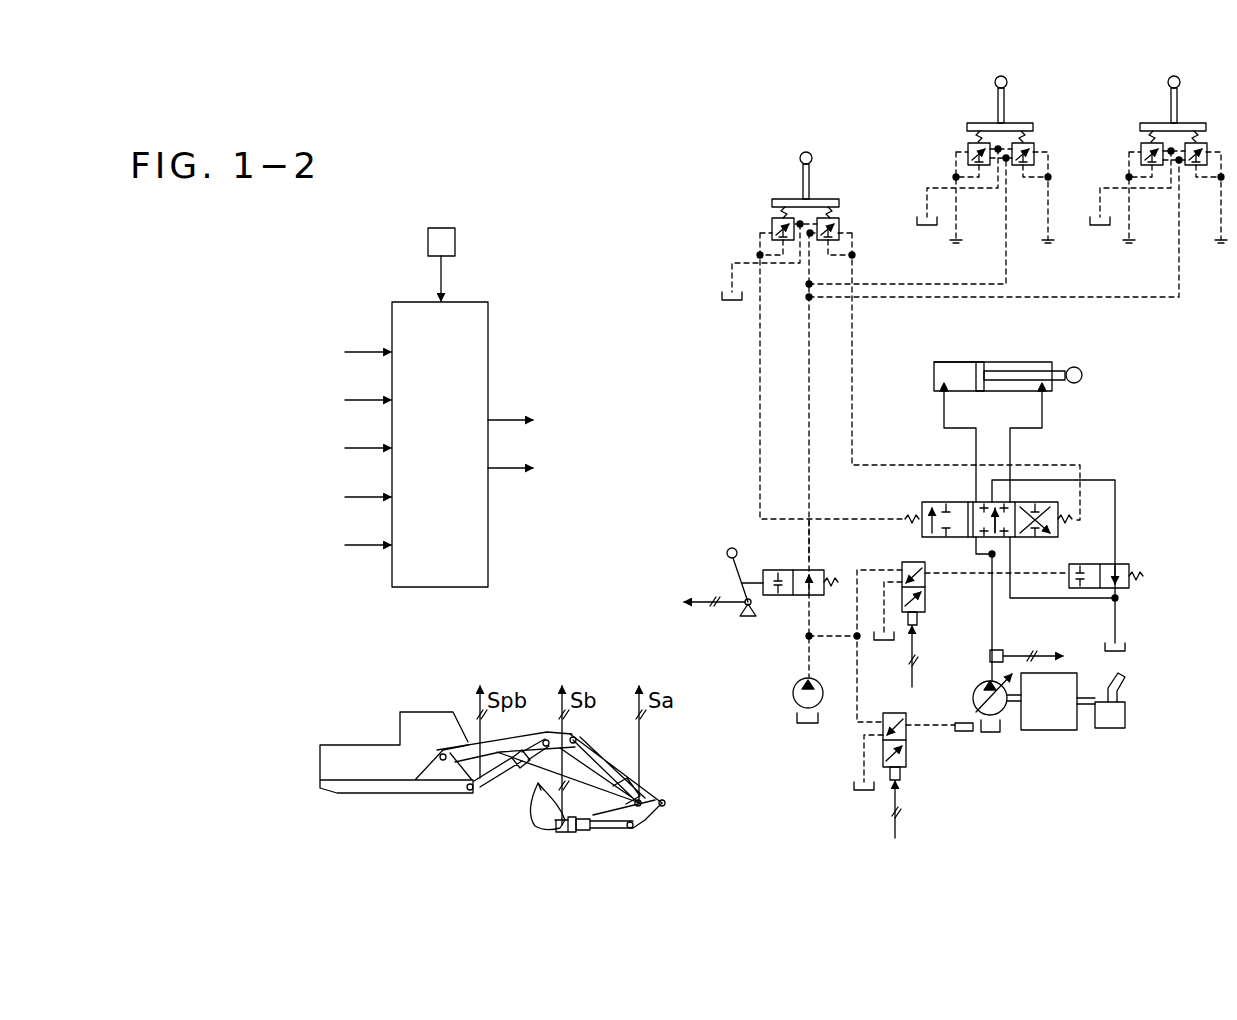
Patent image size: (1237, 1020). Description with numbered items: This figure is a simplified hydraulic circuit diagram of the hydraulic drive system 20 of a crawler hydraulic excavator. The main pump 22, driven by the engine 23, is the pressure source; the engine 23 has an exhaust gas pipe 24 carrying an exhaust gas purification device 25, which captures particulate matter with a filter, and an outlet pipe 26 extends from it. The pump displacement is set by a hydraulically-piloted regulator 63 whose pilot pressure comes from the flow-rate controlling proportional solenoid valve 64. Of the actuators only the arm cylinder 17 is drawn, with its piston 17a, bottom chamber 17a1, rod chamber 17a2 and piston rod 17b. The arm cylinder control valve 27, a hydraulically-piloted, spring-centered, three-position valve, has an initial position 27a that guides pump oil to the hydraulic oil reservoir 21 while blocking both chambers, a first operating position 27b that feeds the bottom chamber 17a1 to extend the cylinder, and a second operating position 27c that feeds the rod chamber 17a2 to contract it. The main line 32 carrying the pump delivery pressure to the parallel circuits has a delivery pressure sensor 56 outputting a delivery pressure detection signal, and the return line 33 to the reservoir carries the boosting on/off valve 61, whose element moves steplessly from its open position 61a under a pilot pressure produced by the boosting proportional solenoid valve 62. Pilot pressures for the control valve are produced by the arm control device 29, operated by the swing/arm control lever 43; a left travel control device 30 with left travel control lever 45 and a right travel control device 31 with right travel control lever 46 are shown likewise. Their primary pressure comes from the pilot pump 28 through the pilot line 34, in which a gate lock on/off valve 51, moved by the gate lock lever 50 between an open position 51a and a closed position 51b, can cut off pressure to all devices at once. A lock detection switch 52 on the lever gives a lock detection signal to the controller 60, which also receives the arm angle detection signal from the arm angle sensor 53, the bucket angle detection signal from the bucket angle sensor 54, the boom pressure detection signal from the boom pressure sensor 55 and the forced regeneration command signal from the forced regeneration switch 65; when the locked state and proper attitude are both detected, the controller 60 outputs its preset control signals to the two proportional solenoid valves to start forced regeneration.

The hydraulic drive system 20 is at (436, 172).
The forced regeneration switch 65 is at (428, 230).
The controller 60 is at (393, 303).
The swing/arm control lever 43 is at (803, 172).
The arm control device 29 is at (772, 204).
The left travel control lever 45 is at (995, 82).
The left travel control device 30 is at (965, 127).
The right travel control lever 46 is at (1168, 82).
The right travel control device 31 is at (1140, 127).
The arm cylinder 17 is at (1013, 362).
The piston of the arm cylinder 17a is at (1000, 362).
The bottom chamber 17a1 is at (944, 364).
The rod chamber 17a2 is at (1037, 362).
The piston rod of the arm cylinder 17b is at (1083, 377).
The arm cylinder control valve 27 is at (1048, 505).
The initial position 27a is at (975, 500).
The first operating position 27b is at (920, 504).
The second operating position 27c is at (1048, 535).
The return line 33 is at (1117, 497).
The main line 32 is at (990, 607).
The delivery pressure sensor 56 is at (1000, 648).
The main pump 22 is at (978, 685).
The hydraulic oil reservoir 21 is at (1000, 735).
The regulator 63 is at (963, 733).
The engine 23 is at (1062, 732).
The exhaust gas pipe 24 is at (1088, 710).
The exhaust gas purification device 25 is at (1118, 730).
The outlet pipe 26 is at (1120, 678).
The boosting proportional solenoid valve 62 is at (903, 564).
The flow-rate controlling proportional solenoid valve 64 is at (890, 713).
The boosting on/off valve 61 is at (1094, 564).
The open position 61a is at (1127, 566).
The gate lock lever 50 is at (729, 549).
The lock detection switch 52 is at (745, 600).
The gate lock on/off valve 51 is at (822, 570).
The open position 51a is at (822, 597).
The closed position 51b is at (783, 597).
The pilot line 34 is at (807, 543).
The pilot pump 28 is at (792, 690).
The boom pressure sensor 55 is at (478, 786).
The arm angle sensor 53 is at (667, 808).
The bucket angle sensor 54 is at (578, 830).